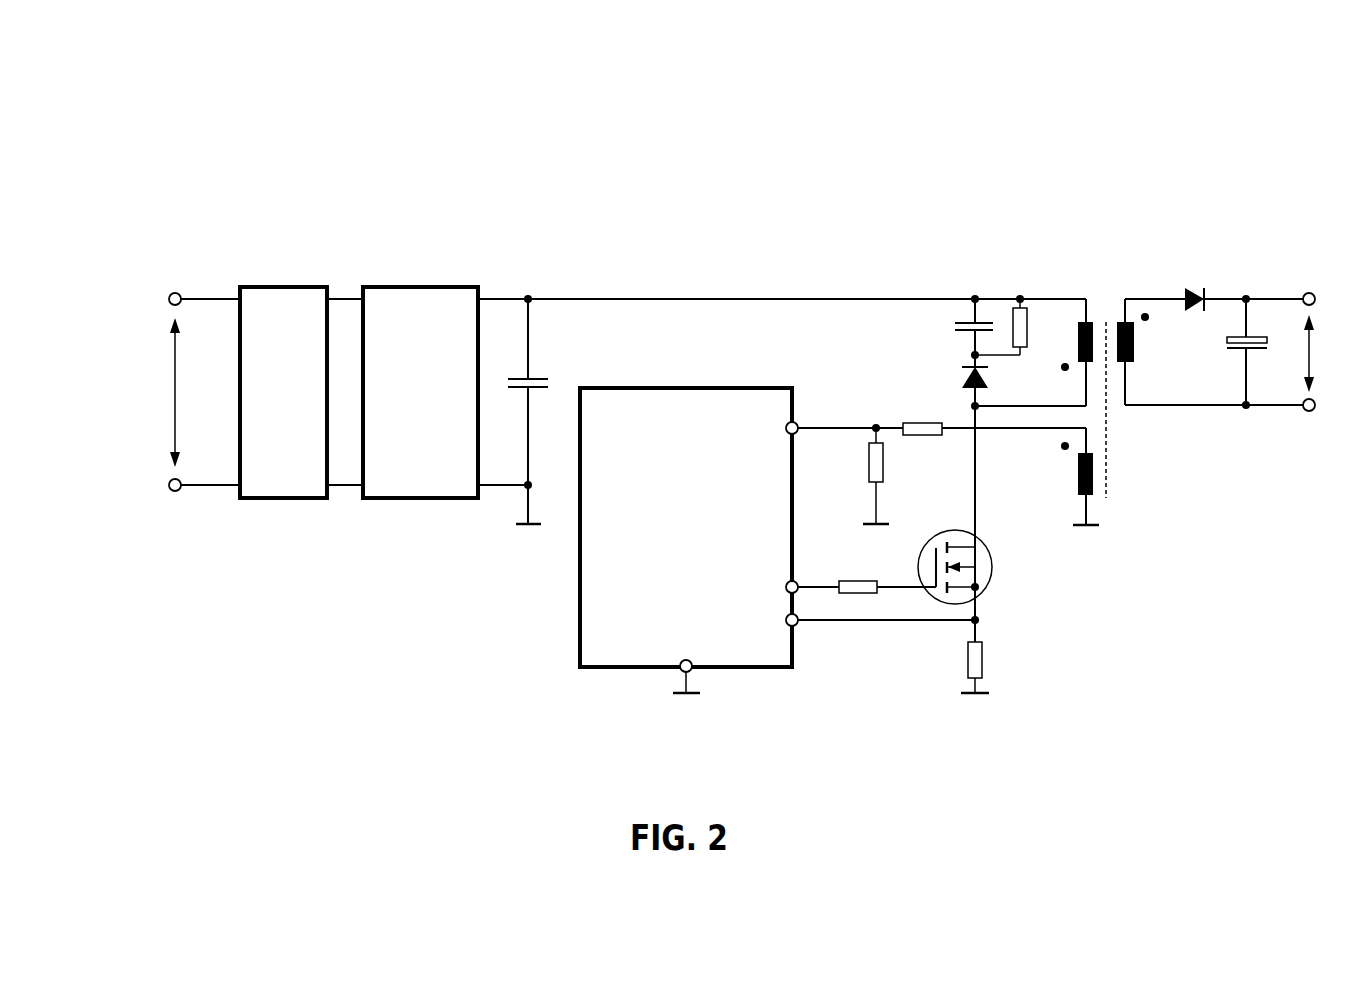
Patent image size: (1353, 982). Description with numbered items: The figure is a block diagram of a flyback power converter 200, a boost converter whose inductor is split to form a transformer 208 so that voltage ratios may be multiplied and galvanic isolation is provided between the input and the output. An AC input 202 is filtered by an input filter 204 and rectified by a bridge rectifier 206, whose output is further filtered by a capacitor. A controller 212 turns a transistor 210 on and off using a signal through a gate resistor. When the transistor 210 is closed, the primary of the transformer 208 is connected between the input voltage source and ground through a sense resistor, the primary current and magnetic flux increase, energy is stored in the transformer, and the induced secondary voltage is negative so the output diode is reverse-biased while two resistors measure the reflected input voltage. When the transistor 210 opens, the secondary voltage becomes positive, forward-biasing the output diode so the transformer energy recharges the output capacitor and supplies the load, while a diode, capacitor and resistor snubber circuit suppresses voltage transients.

The flyback power converter 200 is at (893, 152).
The AC input 202 is at (142, 360).
The input filter 204 is at (283, 392).
The bridge rectifier 206 is at (420, 392).
The transformer 208 is at (1086, 280).
The transistor 210 is at (1006, 589).
The controller 212 is at (689, 540).